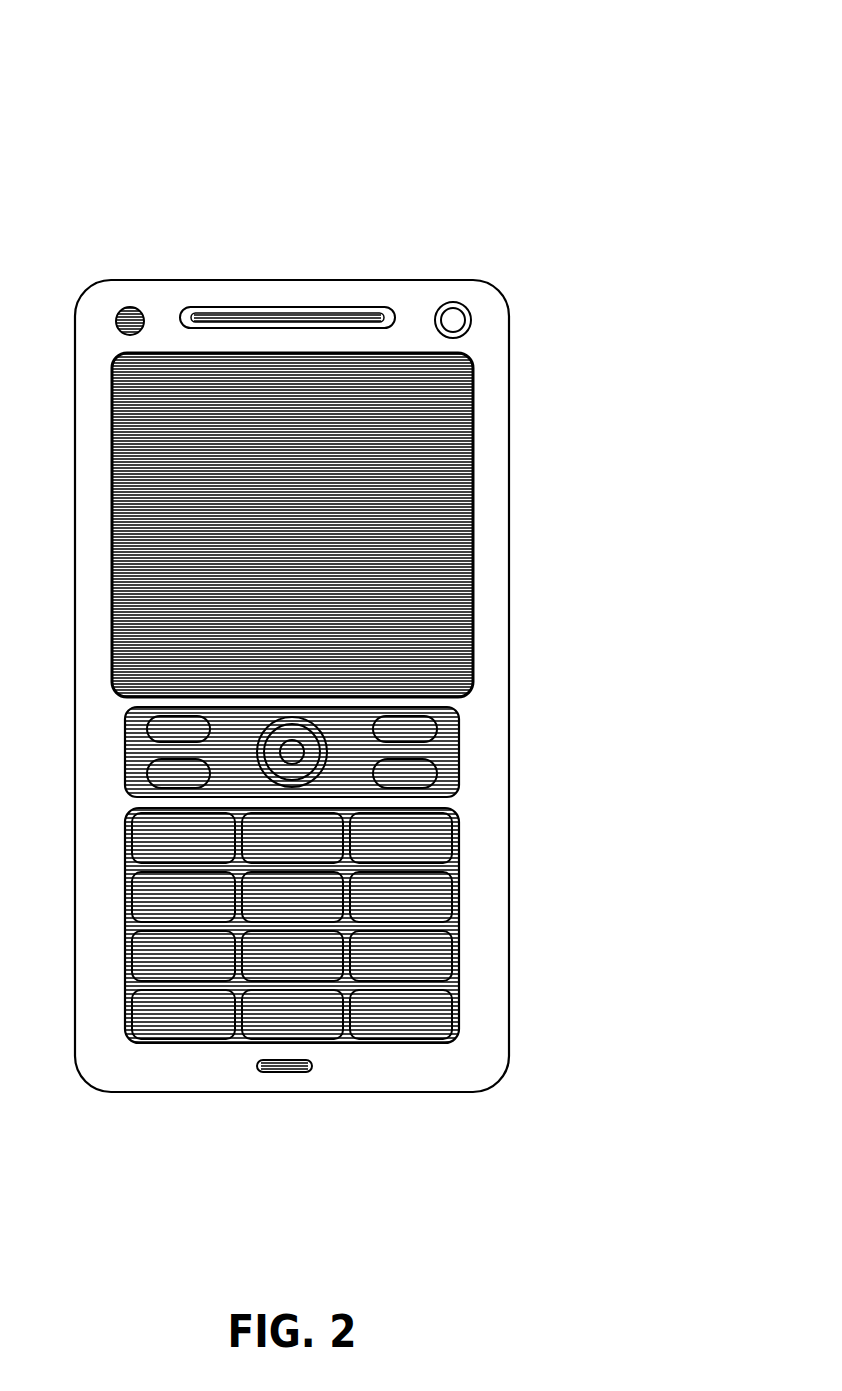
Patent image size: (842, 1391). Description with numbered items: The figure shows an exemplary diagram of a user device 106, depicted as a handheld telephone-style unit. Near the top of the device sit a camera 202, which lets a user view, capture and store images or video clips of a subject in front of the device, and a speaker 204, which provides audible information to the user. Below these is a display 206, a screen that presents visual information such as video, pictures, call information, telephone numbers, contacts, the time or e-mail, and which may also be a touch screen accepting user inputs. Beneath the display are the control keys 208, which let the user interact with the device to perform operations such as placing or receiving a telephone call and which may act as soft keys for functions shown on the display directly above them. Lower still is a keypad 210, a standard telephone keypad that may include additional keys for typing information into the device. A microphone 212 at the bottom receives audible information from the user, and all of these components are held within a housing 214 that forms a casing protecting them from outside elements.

The device 106 is at (327, 103).
The camera 202 is at (130, 306).
The speaker 204 is at (255, 306).
The display 206 is at (413, 353).
The control keys 208 is at (460, 753).
The keypad 210 is at (460, 927).
The microphone 212 is at (283, 1073).
The housing 214 is at (435, 1092).